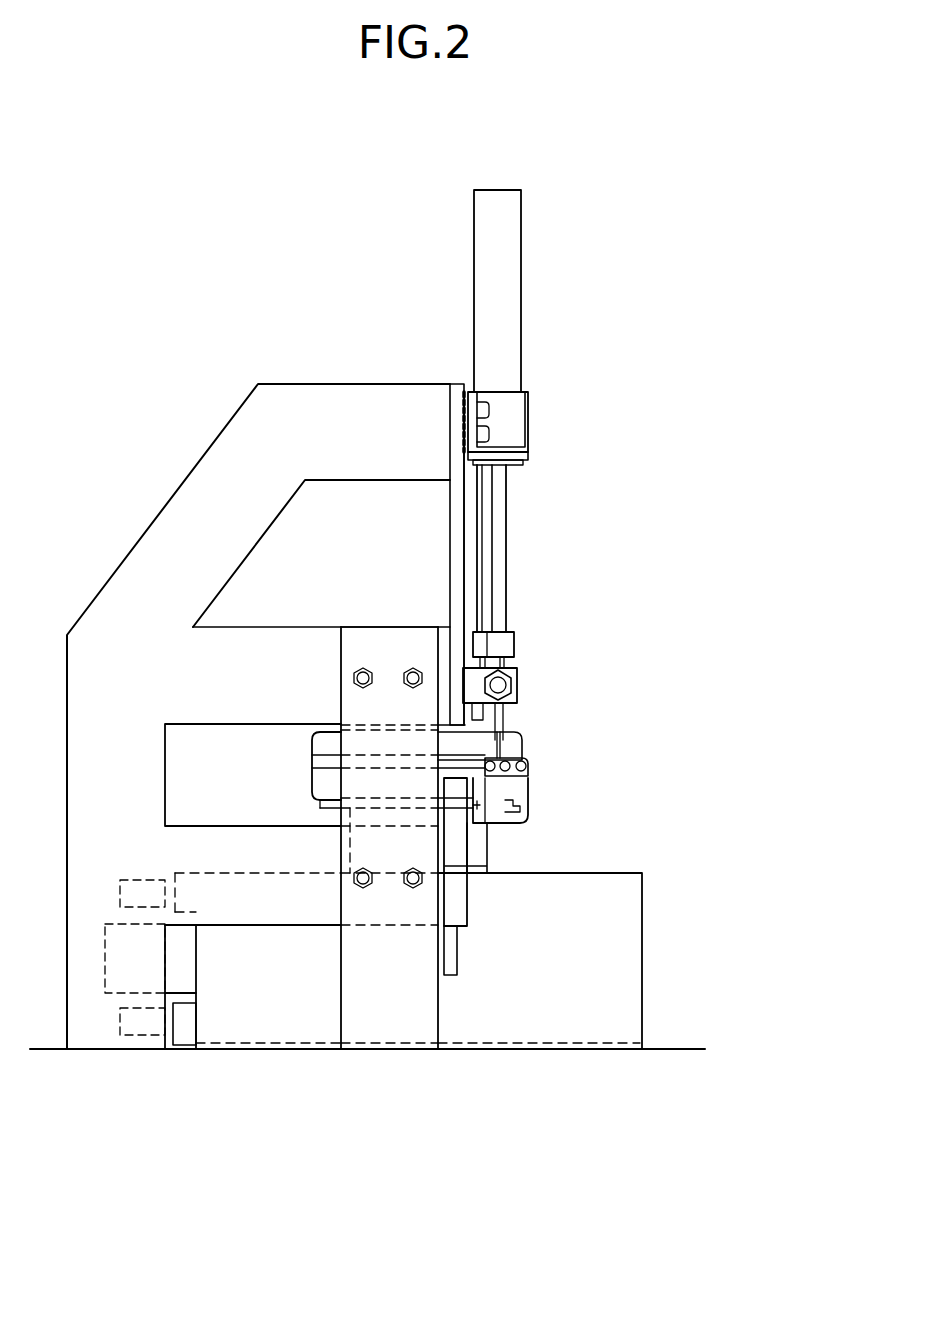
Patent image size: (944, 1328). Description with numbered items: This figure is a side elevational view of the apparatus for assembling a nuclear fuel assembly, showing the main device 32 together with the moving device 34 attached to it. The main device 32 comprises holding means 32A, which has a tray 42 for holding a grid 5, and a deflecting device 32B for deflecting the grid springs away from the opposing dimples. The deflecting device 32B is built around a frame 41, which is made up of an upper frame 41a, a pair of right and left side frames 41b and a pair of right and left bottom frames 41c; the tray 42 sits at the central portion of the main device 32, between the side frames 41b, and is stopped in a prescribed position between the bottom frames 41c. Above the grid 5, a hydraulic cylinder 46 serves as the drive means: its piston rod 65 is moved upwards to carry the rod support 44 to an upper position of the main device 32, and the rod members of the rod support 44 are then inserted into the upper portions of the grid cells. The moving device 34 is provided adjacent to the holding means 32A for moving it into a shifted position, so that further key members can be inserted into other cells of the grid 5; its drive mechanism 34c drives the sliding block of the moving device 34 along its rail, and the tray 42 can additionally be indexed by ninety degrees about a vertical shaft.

The hydraulic cylinder 46 is at (508, 295).
The main device 32 is at (538, 462).
The piston rod 65 is at (503, 512).
The deflecting device 32B is at (520, 588).
The rod support 44 is at (512, 645).
The frame 41 is at (350, 492).
The upper frame 41a is at (395, 456).
The side frames 41b is at (456, 543).
The bottom frames 41c is at (398, 648).
The grid 5 is at (320, 794).
The holding means 32A is at (320, 826).
The tray 42 is at (332, 808).
The moving device 34 is at (610, 868).
The drive mechanism 34c is at (142, 1040).